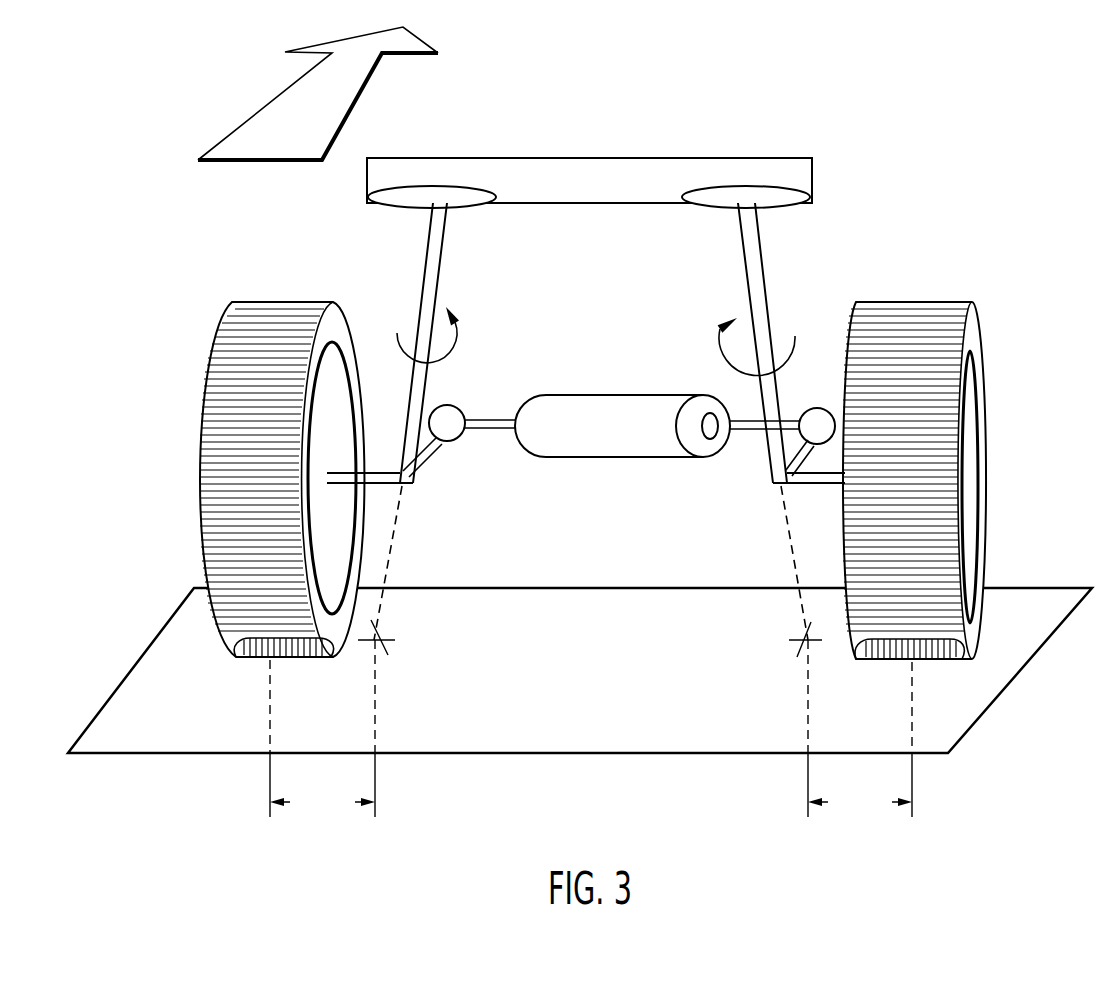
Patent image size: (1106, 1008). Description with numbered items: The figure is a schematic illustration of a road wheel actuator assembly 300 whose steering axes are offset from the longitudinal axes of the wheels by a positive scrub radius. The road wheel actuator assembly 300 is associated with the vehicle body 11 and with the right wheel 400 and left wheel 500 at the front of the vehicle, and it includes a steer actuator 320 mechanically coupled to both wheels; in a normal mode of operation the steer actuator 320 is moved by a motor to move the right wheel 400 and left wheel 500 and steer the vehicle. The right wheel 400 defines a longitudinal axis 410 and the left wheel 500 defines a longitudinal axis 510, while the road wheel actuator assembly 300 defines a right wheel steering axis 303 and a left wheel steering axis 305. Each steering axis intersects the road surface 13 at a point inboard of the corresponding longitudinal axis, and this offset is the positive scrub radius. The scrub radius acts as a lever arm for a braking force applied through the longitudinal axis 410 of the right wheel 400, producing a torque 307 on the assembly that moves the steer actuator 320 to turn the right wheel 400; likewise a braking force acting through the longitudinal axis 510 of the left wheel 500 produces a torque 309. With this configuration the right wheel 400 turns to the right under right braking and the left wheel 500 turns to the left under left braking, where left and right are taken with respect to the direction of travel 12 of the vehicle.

The vehicle body 11 is at (582, 158).
The direction of travel 12 is at (265, 105).
The road surface 13 is at (610, 690).
The road wheel actuator assembly 300 is at (924, 157).
The right wheel steering axis 303 is at (768, 308).
The left wheel steering axis 305 is at (418, 298).
The torque 307 is at (718, 345).
The torque 309 is at (457, 332).
The steer actuator 320 is at (598, 460).
The right wheel 400 is at (985, 342).
The longitudinal axis of the right wheel 410 is at (912, 768).
The left wheel 500 is at (208, 375).
The longitudinal axis of the left wheel 510 is at (270, 710).